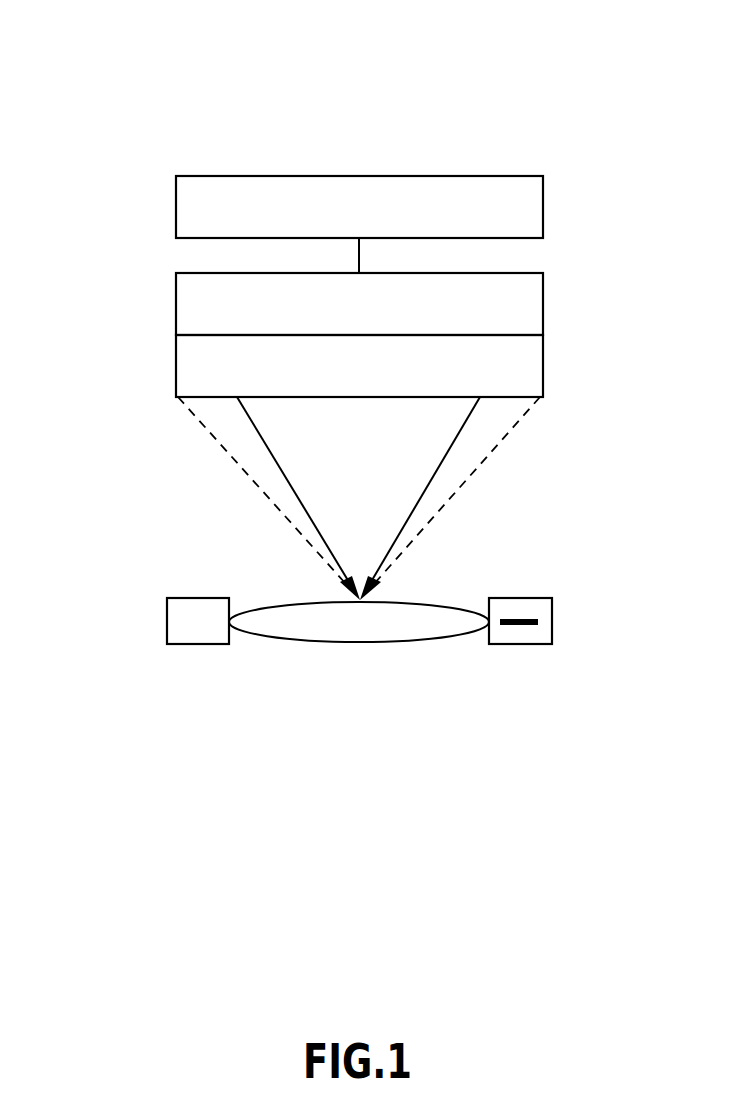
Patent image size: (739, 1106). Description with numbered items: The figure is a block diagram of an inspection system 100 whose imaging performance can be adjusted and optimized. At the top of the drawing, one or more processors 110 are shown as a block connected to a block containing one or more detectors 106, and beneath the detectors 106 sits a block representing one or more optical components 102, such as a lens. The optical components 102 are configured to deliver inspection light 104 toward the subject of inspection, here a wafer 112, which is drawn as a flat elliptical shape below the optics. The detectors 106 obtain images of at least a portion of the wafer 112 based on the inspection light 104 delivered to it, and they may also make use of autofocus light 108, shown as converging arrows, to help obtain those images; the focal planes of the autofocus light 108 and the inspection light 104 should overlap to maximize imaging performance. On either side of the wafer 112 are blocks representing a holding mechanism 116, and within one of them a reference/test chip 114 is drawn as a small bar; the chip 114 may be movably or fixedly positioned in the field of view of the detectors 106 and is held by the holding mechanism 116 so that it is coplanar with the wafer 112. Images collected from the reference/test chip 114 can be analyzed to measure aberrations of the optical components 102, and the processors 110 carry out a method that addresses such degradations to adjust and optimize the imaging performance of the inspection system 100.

The inspection system 100 is at (148, 68).
The optical component 102 is at (543, 365).
The inspection light 104 is at (272, 500).
The detector 106 is at (543, 300).
The autofocus light 108 is at (303, 505).
The processor 110 is at (543, 205).
The wafer 112 is at (358, 642).
The reference/test chip 114 is at (518, 626).
The holding mechanism 116 is at (167, 620).